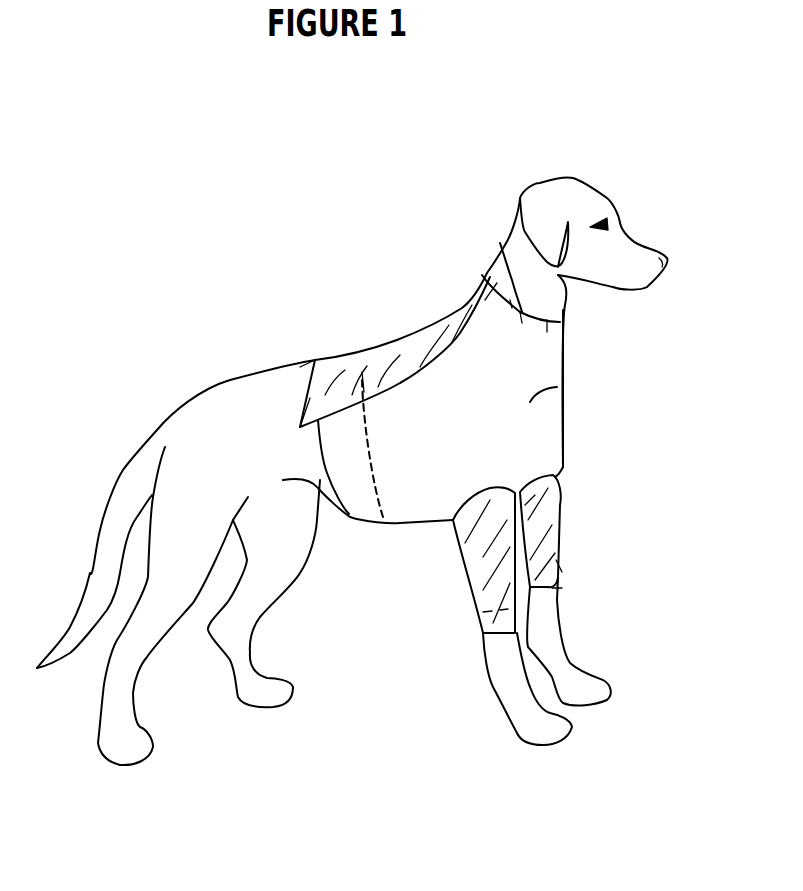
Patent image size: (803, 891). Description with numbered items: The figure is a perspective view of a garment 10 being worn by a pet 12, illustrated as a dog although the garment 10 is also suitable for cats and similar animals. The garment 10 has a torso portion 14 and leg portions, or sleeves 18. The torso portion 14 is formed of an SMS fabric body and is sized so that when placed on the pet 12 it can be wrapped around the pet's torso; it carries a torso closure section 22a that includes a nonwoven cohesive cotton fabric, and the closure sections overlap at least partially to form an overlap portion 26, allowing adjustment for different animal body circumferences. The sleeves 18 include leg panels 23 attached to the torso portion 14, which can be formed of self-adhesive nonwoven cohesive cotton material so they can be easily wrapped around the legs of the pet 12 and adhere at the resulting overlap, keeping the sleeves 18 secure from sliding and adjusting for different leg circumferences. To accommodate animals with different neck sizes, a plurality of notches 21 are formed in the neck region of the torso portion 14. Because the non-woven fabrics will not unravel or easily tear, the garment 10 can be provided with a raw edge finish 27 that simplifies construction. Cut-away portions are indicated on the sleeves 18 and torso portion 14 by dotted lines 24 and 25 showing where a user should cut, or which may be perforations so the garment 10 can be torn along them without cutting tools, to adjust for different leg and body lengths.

The garment 10 is at (212, 133).
The pet 12 is at (598, 168).
The torso portion 14 is at (563, 385).
The leg portions 18 is at (470, 563).
The notches 21 is at (500, 242).
The torso closure section 22a is at (397, 353).
The leg panels 23 is at (560, 593).
The dotted lines 24 is at (560, 565).
The dotted lines 25 is at (363, 363).
The overlap portion 26 is at (300, 367).
The raw edge finish 27 is at (293, 400).